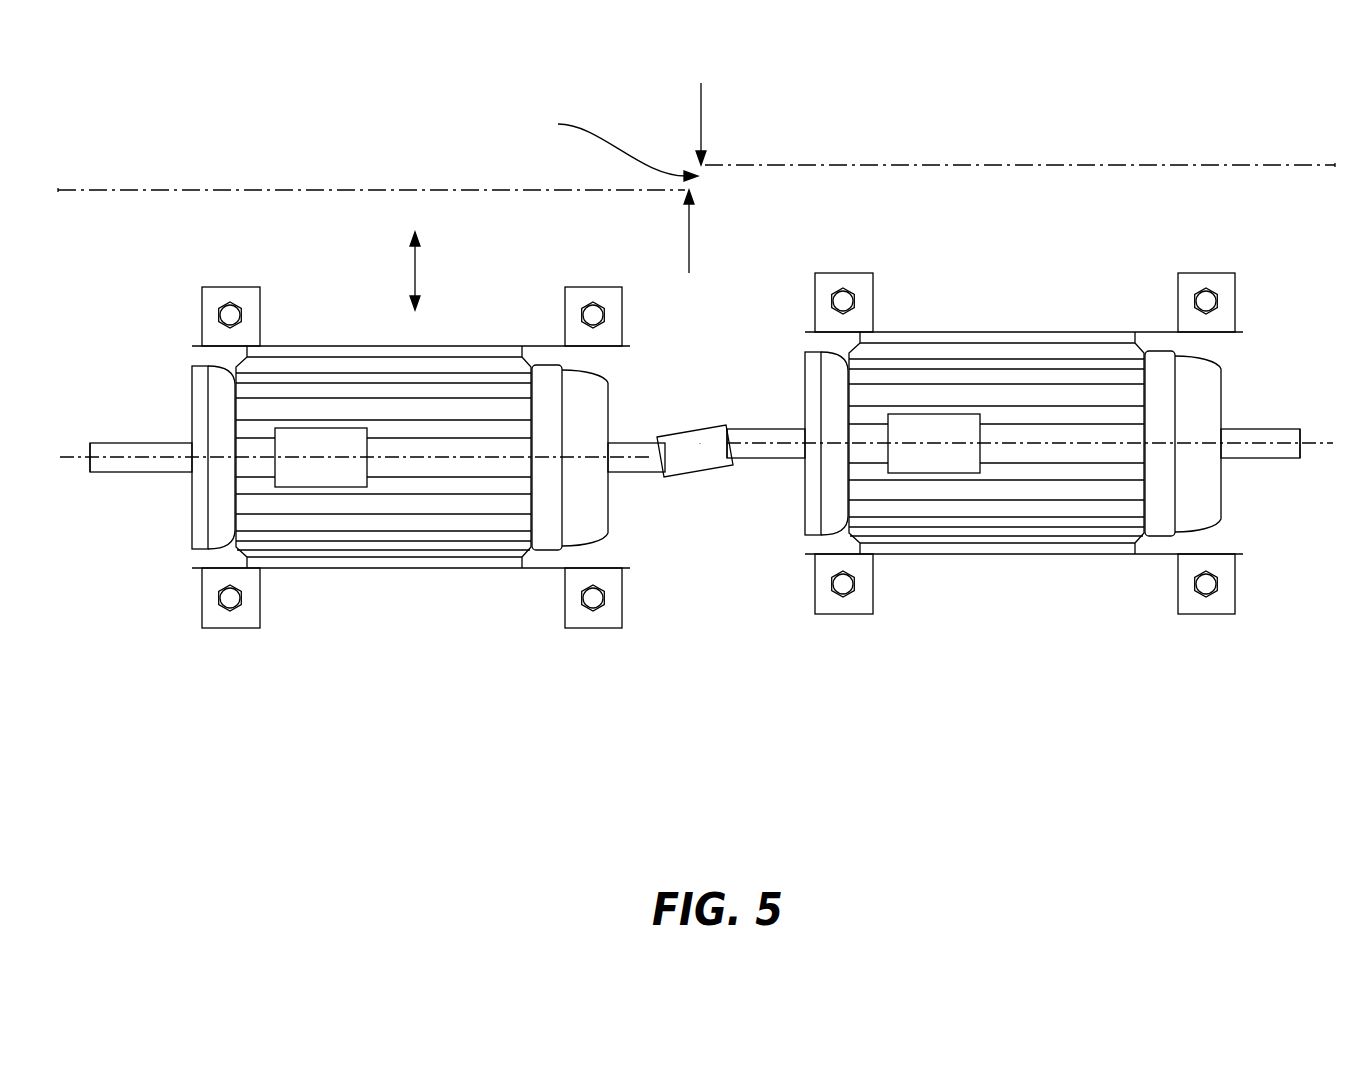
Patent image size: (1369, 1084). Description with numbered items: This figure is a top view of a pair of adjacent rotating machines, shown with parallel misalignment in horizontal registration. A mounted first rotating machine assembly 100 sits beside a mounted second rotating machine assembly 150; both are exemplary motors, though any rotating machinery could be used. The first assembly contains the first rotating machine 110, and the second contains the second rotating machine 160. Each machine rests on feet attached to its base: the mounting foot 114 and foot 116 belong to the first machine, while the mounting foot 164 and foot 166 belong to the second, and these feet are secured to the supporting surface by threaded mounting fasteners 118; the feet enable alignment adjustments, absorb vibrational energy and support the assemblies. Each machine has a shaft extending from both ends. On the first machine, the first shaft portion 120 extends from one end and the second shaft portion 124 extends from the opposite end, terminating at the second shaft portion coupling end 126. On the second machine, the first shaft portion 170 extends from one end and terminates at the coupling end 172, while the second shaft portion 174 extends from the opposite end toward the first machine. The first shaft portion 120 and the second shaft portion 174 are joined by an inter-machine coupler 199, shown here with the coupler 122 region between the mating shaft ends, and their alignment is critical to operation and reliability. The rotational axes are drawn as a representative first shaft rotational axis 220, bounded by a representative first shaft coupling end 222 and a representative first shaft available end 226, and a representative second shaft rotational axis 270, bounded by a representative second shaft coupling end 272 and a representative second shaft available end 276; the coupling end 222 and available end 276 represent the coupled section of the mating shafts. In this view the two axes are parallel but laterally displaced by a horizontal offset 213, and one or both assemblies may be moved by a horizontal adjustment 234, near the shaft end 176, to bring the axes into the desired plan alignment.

The mounted first rotating machine assembly 100 is at (378, 479).
The first rotating machine 110 is at (385, 357).
The mounting foot 114 is at (606, 613).
The foot 116 is at (243, 613).
The threaded mounting fastener 118 is at (230, 598).
The first shaft portion 120 is at (635, 442).
The coupling 122 is at (667, 447).
The second shaft portion 124 is at (146, 443).
The second shaft portion coupling end 126 is at (90, 453).
The mounted second rotating machine assembly 150 is at (1024, 468).
The second rotating machine 160 is at (1024, 412).
The mounting foot 164 is at (1235, 613).
The foot 166 is at (874, 613).
The first shaft portion 170 is at (1255, 427).
The second shaft portion coupling end 172 is at (1310, 440).
The second shaft portion 174 is at (776, 427).
The shaft end 176 is at (723, 427).
The inter-machine coupler 199 is at (700, 443).
The horizontal offset 213 is at (605, 145).
The representative first shaft rotational axis 220 is at (313, 190).
The representative first shaft coupling end 222 is at (693, 192).
The representative first shaft available end 226 is at (58, 190).
The horizontal adjustment 234 is at (395, 258).
The representative second shaft rotational axis 270 is at (975, 166).
The representative second shaft coupling end 272 is at (1339, 166).
The representative second shaft available end 276 is at (700, 165).